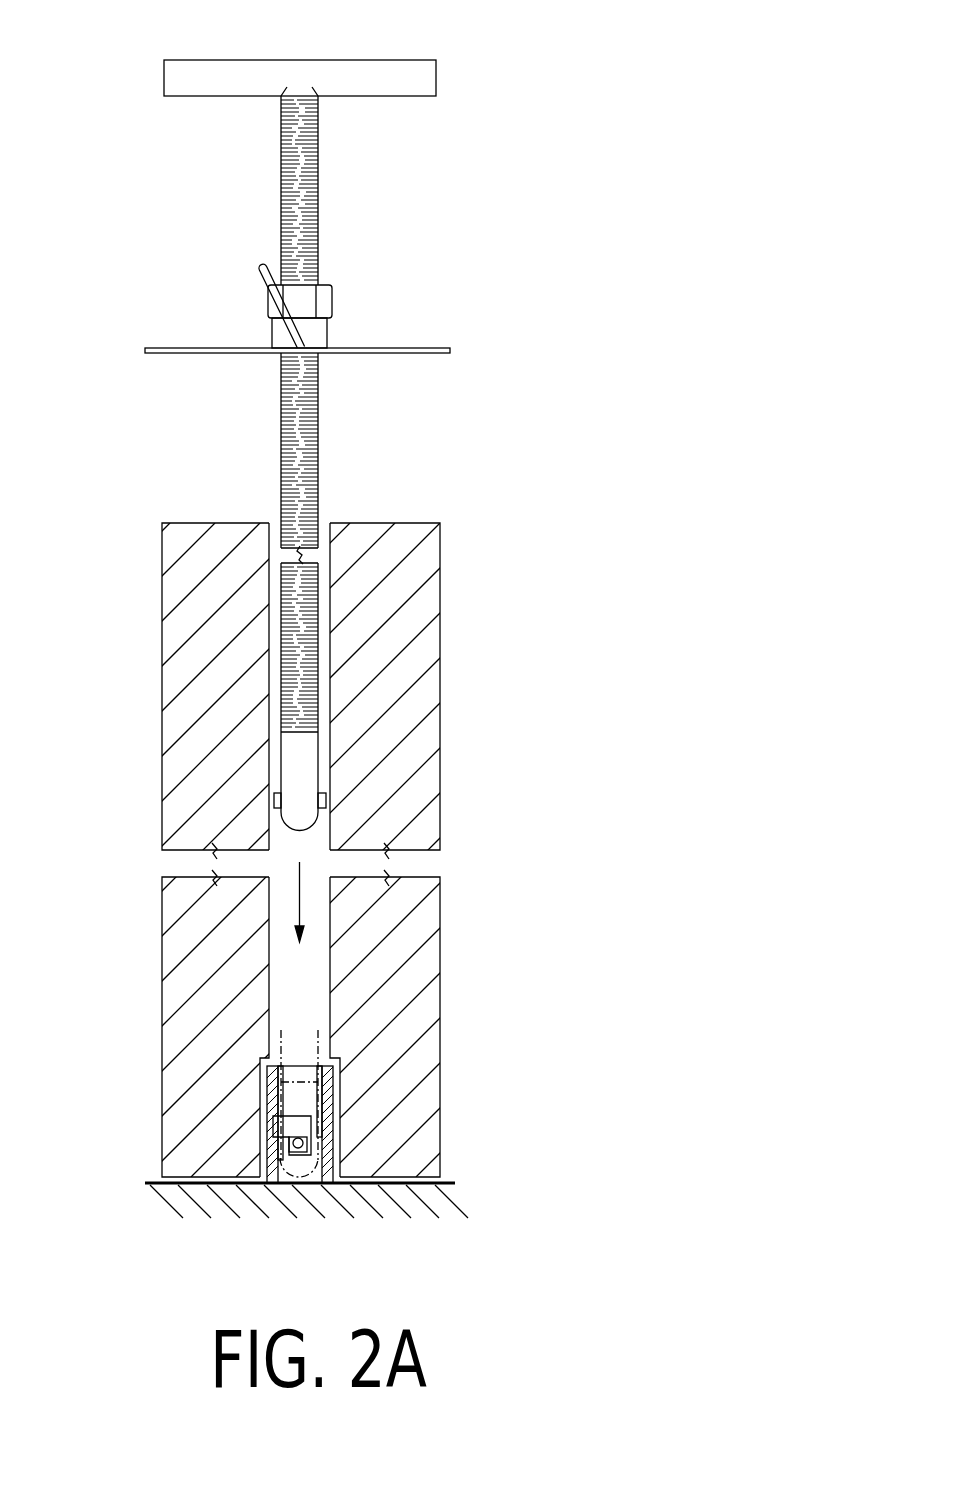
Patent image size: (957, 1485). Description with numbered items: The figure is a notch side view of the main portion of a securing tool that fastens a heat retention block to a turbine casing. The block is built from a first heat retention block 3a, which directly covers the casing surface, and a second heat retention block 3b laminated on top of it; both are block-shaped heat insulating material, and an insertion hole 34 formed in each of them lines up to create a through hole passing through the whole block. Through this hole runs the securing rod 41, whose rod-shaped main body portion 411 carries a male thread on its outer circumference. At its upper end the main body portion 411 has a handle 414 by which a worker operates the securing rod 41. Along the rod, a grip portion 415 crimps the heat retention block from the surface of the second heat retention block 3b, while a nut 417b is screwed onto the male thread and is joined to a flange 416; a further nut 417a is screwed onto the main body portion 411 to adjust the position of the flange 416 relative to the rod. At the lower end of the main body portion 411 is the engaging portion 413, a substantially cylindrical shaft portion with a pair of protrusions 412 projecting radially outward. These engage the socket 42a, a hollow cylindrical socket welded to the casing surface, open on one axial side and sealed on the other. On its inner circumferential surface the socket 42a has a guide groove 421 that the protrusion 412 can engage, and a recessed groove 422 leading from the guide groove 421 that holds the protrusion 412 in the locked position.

The securing rod 41 is at (221, 166).
The handle 414 is at (373, 72).
The main body portion 411 is at (281, 436).
The grip portion 415 is at (262, 275).
The nut 417a is at (322, 300).
The nut 417b is at (322, 332).
The flange 416 is at (410, 356).
The engaging portion 413 is at (303, 750).
The protrusions 412 is at (322, 810).
The second heat retention block 3b is at (428, 651).
The first heat retention block 3a is at (428, 1018).
The insertion hole 34 is at (325, 521).
The socket 42a is at (278, 1186).
The guide groove 421 is at (283, 1095).
The recessed groove 422 is at (310, 1130).